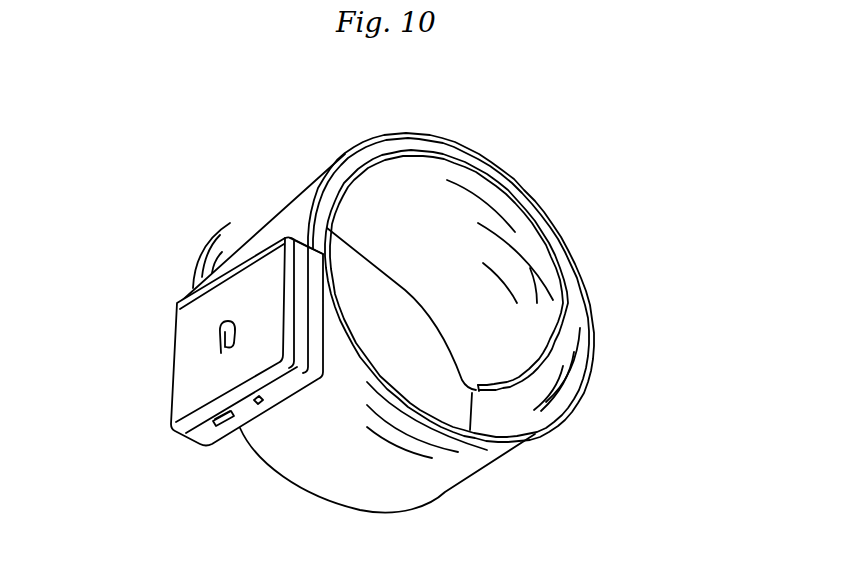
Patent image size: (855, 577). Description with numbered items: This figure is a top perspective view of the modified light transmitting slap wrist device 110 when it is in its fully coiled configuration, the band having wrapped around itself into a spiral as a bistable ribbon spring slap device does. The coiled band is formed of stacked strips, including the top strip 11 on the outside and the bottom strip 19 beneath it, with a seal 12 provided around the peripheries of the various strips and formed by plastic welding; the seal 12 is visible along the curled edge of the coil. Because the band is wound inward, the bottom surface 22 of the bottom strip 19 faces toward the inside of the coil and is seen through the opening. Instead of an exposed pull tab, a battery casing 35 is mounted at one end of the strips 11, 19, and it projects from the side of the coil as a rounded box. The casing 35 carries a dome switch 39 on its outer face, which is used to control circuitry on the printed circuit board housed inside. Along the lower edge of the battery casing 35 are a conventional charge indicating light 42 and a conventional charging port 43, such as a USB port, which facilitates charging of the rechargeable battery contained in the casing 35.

The slap wrist device 110 is at (648, 163).
The top strip 11 is at (298, 195).
The seal 12 is at (587, 302).
The bottom surface 22 is at (447, 218).
The bottom strip 19 is at (445, 281).
The battery casing 35 is at (192, 392).
The dome switch 39 is at (218, 340).
The charge indicating light 42 is at (259, 403).
The charging port 43 is at (224, 428).